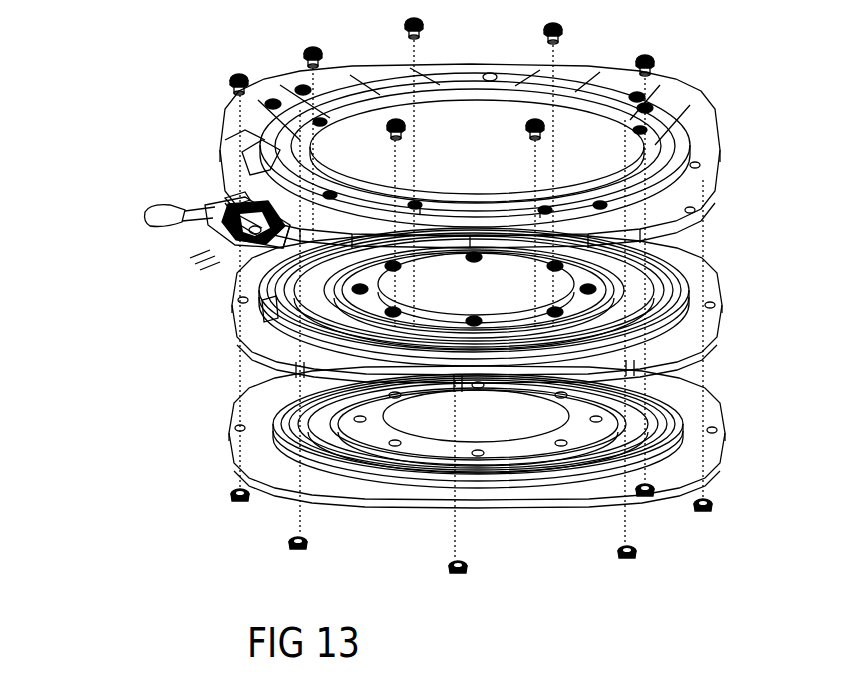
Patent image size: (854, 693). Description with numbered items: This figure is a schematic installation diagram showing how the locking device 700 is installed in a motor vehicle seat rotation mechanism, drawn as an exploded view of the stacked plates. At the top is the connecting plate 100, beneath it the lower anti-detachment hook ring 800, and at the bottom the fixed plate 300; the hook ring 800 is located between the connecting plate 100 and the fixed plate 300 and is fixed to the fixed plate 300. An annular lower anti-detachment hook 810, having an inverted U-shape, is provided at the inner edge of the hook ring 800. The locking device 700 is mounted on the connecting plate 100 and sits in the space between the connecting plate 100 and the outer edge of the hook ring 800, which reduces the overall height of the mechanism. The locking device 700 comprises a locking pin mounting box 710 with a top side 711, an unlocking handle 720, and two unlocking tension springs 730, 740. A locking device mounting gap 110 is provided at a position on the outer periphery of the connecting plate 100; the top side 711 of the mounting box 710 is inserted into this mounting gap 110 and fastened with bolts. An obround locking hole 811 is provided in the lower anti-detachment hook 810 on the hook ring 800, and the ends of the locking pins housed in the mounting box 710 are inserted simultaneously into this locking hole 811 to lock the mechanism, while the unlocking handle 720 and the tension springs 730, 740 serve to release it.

The connecting plate 100 is at (720, 158).
The locking device mounting gap 110 is at (242, 152).
The fixed plate 300 is at (712, 432).
The locking device 700 is at (213, 249).
The locking pin mounting box 710 is at (248, 252).
The top side 711 is at (232, 200).
The unlocking handle 720 is at (185, 213).
The unlocking tension spring 730 is at (148, 230).
The unlocking tension spring 740 is at (233, 247).
The lower anti-detachment hook ring 800 is at (464, 310).
The lower anti-detachment hook 810 is at (688, 282).
The obround locking hole 811 is at (267, 320).